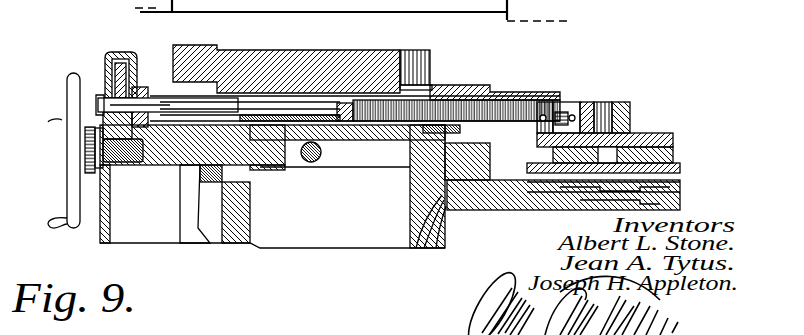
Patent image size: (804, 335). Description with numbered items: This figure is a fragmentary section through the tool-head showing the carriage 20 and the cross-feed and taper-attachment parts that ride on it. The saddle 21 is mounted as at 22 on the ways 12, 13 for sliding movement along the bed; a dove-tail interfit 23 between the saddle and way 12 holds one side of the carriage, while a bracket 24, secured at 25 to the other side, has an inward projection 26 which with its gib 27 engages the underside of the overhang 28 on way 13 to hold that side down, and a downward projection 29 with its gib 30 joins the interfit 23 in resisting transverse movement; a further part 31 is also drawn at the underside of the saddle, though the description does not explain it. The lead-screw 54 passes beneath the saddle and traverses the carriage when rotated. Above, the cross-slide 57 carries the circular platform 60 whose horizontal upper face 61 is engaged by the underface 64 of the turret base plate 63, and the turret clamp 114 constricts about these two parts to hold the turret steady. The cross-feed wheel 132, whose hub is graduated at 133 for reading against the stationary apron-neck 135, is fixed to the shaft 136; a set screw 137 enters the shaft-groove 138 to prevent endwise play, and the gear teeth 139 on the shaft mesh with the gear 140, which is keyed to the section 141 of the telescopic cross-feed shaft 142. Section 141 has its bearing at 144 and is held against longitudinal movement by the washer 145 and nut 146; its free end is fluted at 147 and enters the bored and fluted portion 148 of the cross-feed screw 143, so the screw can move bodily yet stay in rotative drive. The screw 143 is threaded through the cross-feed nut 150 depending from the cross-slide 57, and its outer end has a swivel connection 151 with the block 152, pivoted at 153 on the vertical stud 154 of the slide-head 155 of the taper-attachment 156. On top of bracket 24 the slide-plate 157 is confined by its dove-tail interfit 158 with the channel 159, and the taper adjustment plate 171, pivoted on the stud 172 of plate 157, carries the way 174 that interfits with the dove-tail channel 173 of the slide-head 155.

The cross-feed wheel 132 is at (70, 82).
The gear teeth 139 is at (70, 220).
The set screw 137 is at (96, 125).
The apron-neck 135 is at (92, 172).
The shaft-groove 138 is at (96, 164).
The gear 140 is at (122, 54).
The shaft section 141 is at (134, 100).
The graduations 133 is at (104, 128).
The shaft 136 is at (106, 150).
The bearing 144 is at (150, 90).
The washer 145 is at (152, 122).
The nut 146 is at (100, 105).
The fluted portion 147 is at (206, 80).
The circular platform 60 is at (392, 76).
The turret clamp 114 is at (428, 54).
The upper face 61 is at (386, 60).
The base plate 63 is at (380, 62).
The underface 64 is at (284, 66).
The bored and fluted portion 148 is at (296, 104).
The telescopic cross-feed shaft 142 is at (306, 108).
The securement 25 is at (512, 118).
The cross-feed screw 143 is at (500, 100).
The carriage 20 is at (466, 92).
The cross-feed nut 150 is at (462, 96).
The cross-slide 57 is at (468, 98).
The way 12 is at (262, 190).
The dove-tail interfit 23 is at (188, 220).
The support 31 is at (214, 200).
The downward projection 29 is at (268, 164).
The gib 30 is at (262, 172).
The lead-screw 54 is at (314, 160).
The saddle 21 is at (374, 150).
The way 13 is at (420, 196).
The mounting 22 is at (258, 210).
The overhang 28 is at (420, 236).
The gib 27 is at (428, 244).
The inward projection 26 is at (436, 250).
The bracket 24 is at (494, 208).
The swivel connection 151 is at (546, 106).
The block 152 is at (590, 108).
The pivot 153 is at (596, 110).
The vertical stud 154 is at (600, 110).
The stud 172 is at (606, 138).
The dove-tail channel 173 is at (636, 140).
The slide-head 155 is at (662, 132).
The taper-attachment 156 is at (670, 124).
The way 174 is at (652, 156).
The taper adjustment plate 171 is at (680, 167).
The slide-plate 157 is at (680, 177).
The dove-tail interfit 158 is at (680, 188).
The channel 159 is at (680, 200).